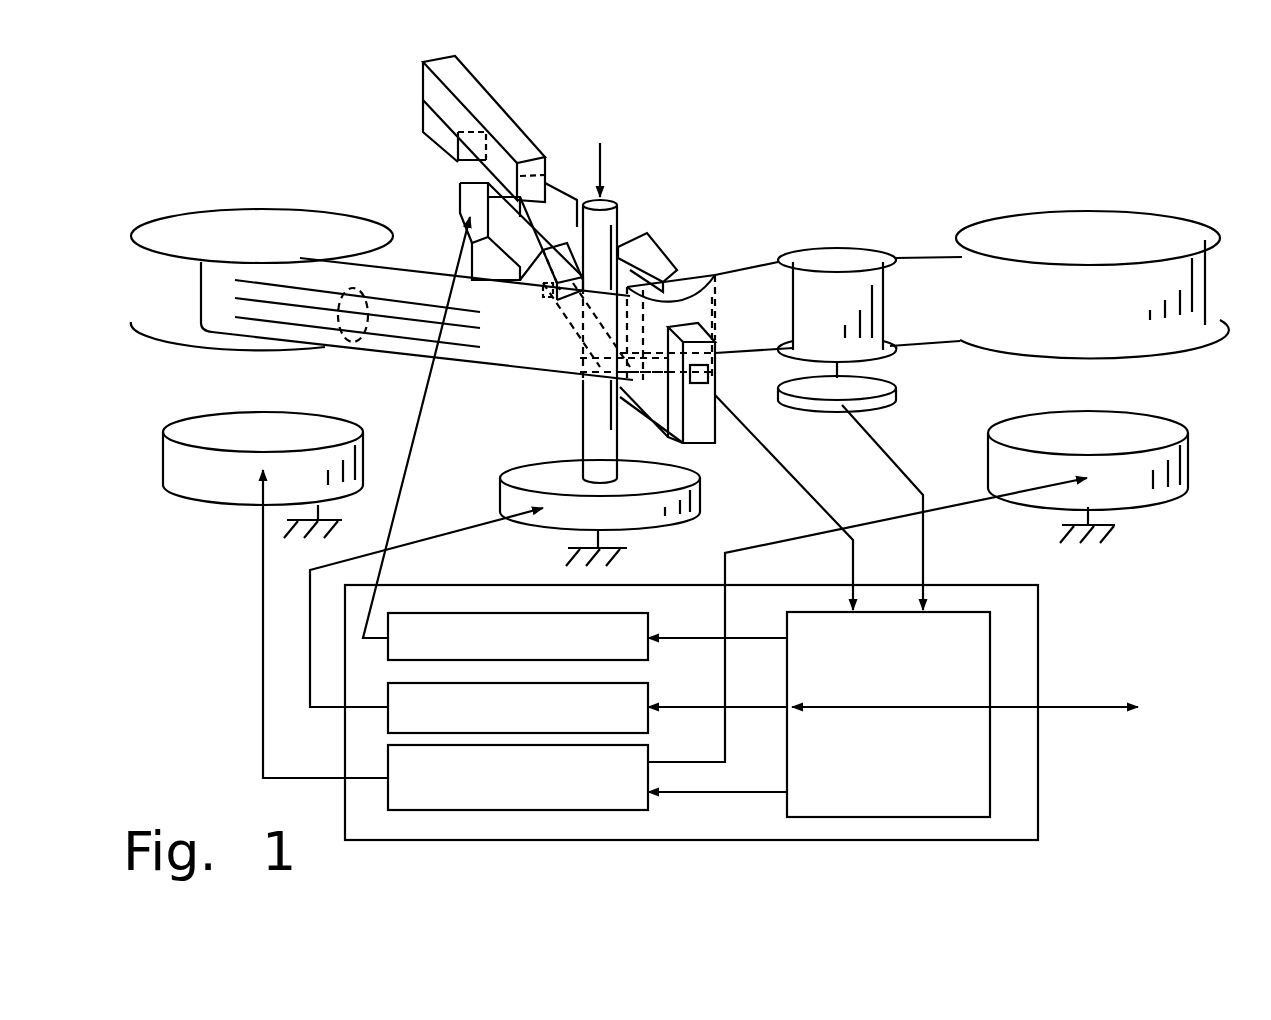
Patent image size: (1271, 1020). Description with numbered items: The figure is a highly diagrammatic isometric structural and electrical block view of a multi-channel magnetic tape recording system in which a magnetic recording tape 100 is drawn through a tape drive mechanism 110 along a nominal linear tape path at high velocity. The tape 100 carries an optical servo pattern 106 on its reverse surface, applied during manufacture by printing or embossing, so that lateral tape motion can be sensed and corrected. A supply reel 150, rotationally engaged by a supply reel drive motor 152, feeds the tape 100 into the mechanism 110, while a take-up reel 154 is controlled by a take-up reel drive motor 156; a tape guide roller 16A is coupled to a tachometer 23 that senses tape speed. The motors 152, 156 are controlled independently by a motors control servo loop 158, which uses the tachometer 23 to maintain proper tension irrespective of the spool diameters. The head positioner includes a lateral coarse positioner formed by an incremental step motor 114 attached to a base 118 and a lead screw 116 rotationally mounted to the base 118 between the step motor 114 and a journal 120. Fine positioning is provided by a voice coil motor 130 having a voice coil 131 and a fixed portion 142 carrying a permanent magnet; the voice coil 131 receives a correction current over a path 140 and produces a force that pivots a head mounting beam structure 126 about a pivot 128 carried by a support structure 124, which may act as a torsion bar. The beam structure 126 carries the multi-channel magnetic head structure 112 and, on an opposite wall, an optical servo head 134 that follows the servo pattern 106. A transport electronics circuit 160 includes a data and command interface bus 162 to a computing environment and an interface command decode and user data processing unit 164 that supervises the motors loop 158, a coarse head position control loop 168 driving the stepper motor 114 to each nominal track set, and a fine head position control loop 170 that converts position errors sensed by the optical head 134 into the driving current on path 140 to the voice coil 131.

The magnetic recording tape 100 is at (965, 332).
The optical servo pattern 106 is at (352, 342).
The tape drive mechanism 110 is at (222, 702).
The multi-channel magnetic head structure 112 is at (705, 282).
The incremental step motor 114 is at (527, 470).
The lead screw 116 is at (587, 408).
The base 118 is at (318, 513).
The journal 120 is at (610, 166).
The support structure 124 is at (455, 200).
The head mounting beam structure 126 is at (440, 185).
The pivot 128 is at (472, 258).
The voice coil motor 130 is at (533, 218).
The voice coil 131 is at (435, 148).
The optical servo head 134 is at (708, 360).
The path 140 is at (427, 427).
The fixed portion 142 is at (428, 92).
The supply reel 150 is at (1105, 226).
The supply reel drive motor 152 is at (1148, 495).
The take-up reel 154 is at (218, 222).
The take-up reel drive motor 156 is at (213, 490).
The motors control servo loop 158 is at (627, 805).
The transport electronics circuit 160 is at (492, 587).
The data and command interface bus 162 is at (1080, 705).
The interface command decode and user data processing unit 164 is at (915, 802).
The coarse head position control loop 168 is at (638, 695).
The fine head position control loop 170 is at (628, 628).
The tape guide roller 16A is at (852, 231).
The tachometer 23 is at (812, 408).